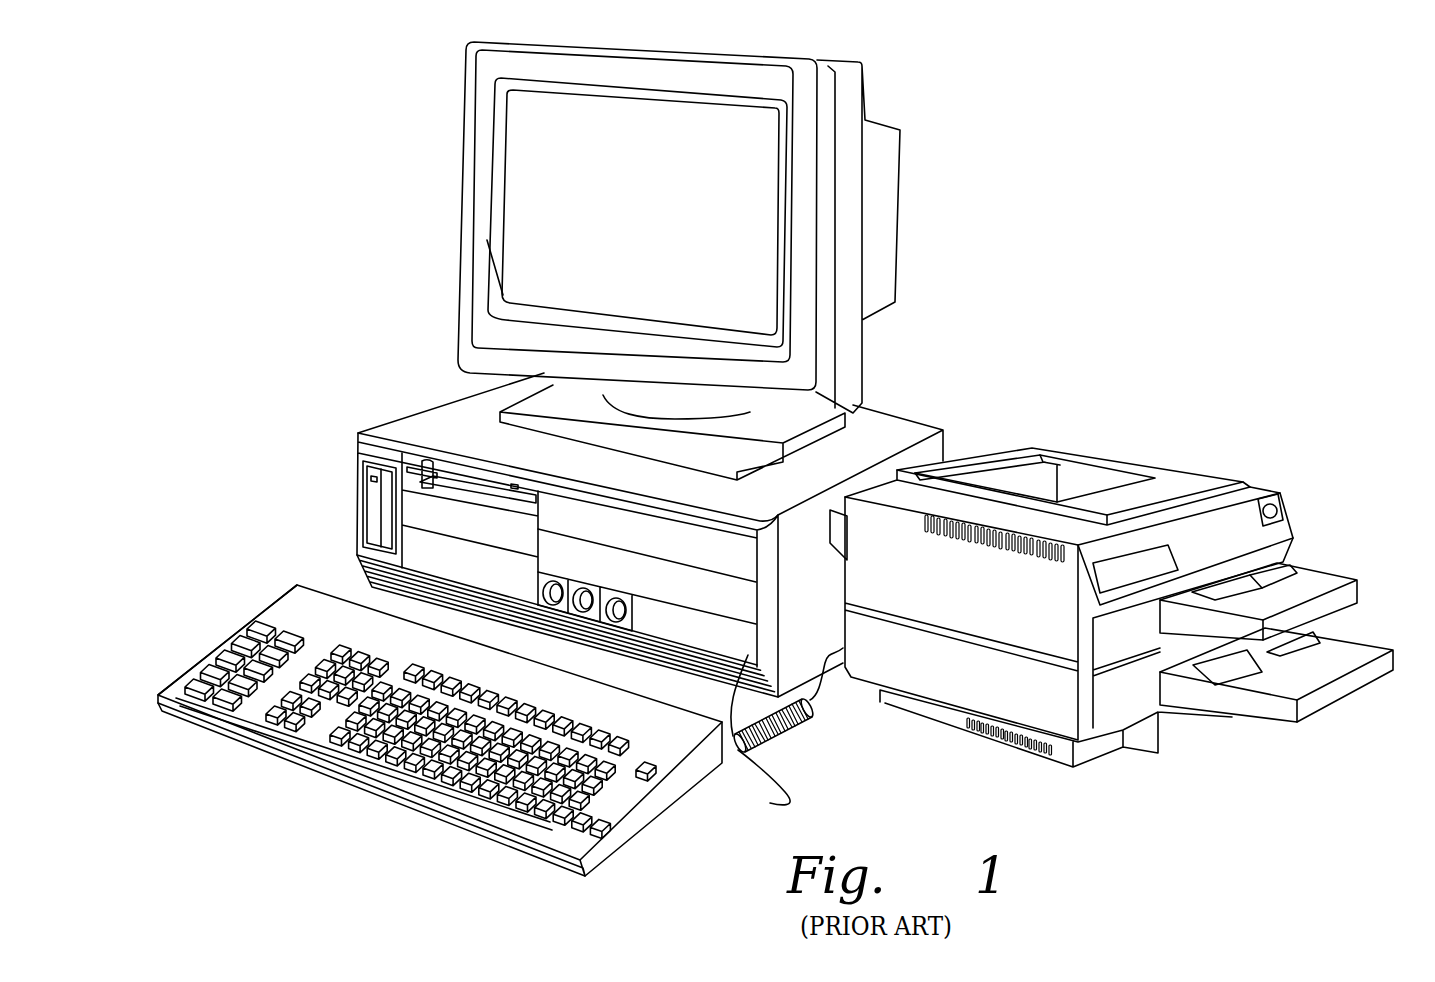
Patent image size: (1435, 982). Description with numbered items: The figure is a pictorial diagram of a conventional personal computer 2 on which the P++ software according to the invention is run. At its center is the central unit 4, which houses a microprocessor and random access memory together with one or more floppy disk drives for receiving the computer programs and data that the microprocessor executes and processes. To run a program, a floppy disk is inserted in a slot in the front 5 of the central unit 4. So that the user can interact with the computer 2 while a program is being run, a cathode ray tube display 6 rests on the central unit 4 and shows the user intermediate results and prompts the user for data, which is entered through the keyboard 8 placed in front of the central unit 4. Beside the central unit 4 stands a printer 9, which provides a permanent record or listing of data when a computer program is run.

The personal computer 2 is at (283, 416).
The central unit 4 is at (942, 428).
The front of the central unit 5 is at (786, 792).
The cathode ray tube display 6 is at (523, 180).
The keyboard 8 is at (383, 777).
The printer 9 is at (1147, 477).